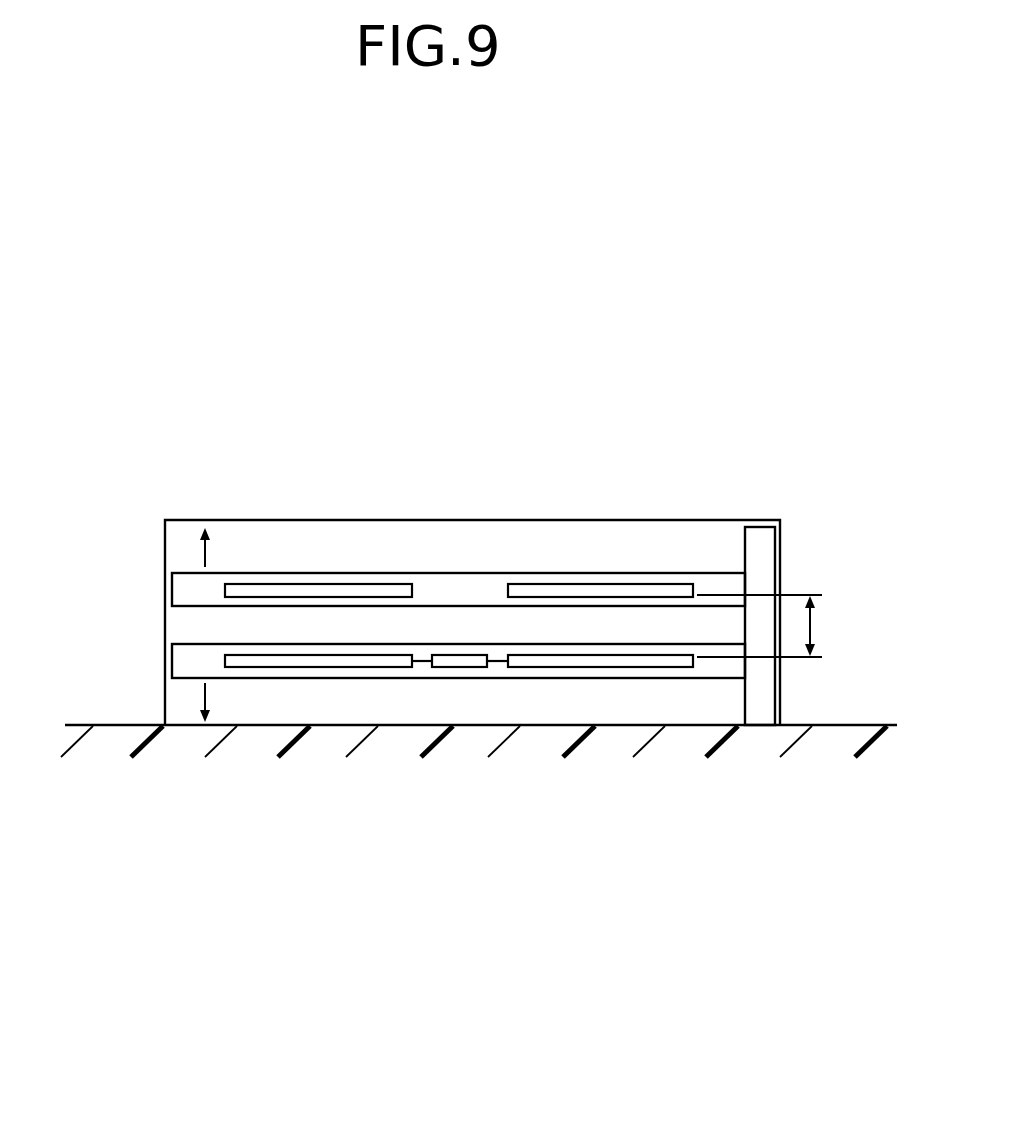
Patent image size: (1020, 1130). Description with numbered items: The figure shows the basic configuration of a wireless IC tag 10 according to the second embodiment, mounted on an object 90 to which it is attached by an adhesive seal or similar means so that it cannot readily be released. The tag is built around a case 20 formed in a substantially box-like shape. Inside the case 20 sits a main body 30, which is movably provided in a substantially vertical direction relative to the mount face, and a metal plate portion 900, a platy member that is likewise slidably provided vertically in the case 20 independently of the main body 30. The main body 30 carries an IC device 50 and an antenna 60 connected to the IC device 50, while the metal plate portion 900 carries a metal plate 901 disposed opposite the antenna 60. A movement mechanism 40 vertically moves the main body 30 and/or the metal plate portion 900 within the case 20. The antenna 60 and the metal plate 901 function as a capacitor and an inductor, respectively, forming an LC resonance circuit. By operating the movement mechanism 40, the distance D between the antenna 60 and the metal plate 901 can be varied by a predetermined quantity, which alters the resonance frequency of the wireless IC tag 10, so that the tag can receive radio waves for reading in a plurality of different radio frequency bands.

The wireless IC tag 10 is at (554, 364).
The case 20 is at (728, 518).
The main body 30 is at (172, 653).
The movement mechanism 40 is at (762, 543).
The IC device 50 is at (460, 663).
The antenna 60 is at (333, 663).
The object 90 is at (507, 913).
The metal plate portion 900 is at (172, 583).
The metal plate 901 is at (322, 590).